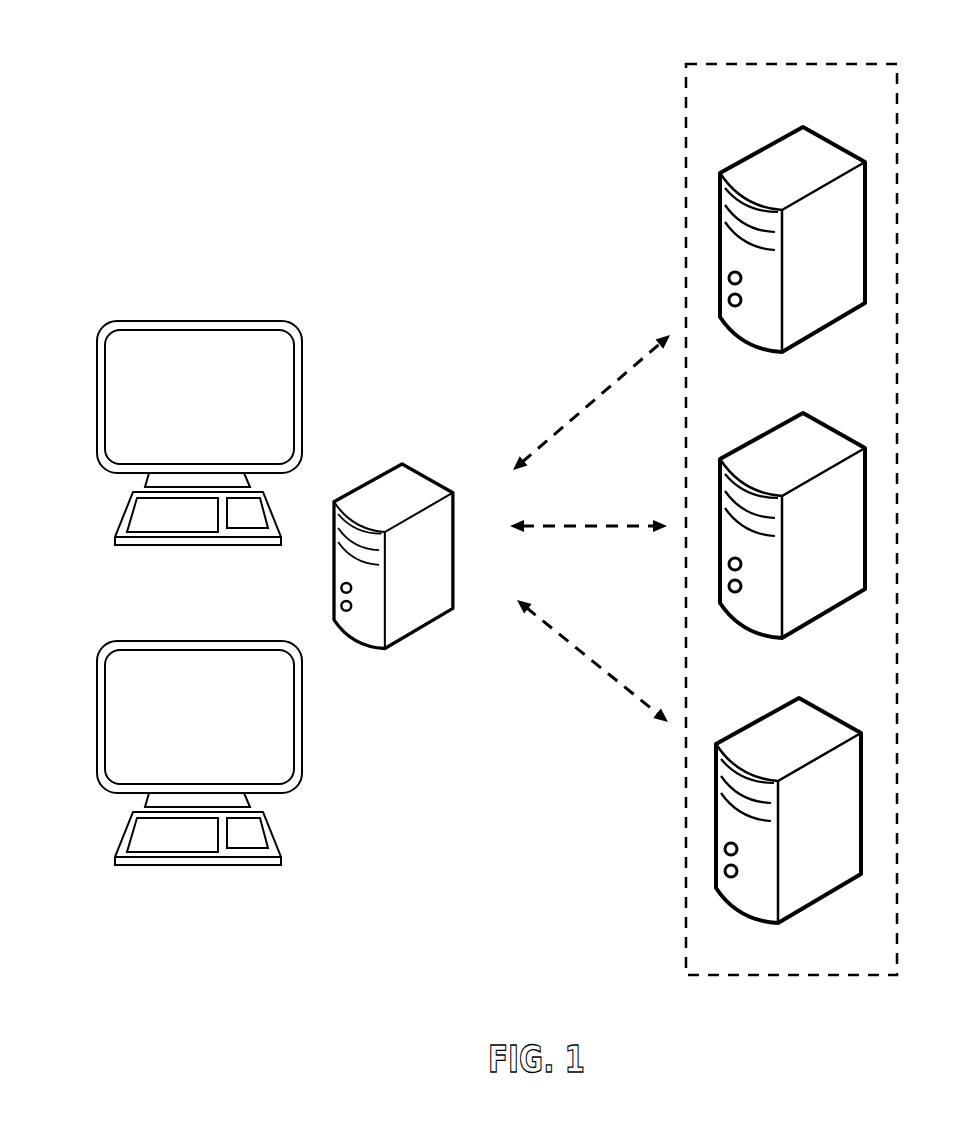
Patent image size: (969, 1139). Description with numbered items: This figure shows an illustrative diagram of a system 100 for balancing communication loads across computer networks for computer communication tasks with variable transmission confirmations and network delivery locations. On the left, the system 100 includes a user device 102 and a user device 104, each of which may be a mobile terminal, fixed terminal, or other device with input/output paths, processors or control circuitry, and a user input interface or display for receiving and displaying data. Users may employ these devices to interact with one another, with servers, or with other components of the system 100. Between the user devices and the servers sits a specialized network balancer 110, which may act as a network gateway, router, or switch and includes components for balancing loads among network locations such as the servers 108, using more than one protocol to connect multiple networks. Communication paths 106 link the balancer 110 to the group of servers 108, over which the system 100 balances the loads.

The system 100 is at (523, 37).
The user device 102 is at (143, 315).
The user device 104 is at (143, 635).
The communication path(s) 106 is at (586, 385).
The servers 108 is at (812, 102).
The balancer 110 is at (362, 662).